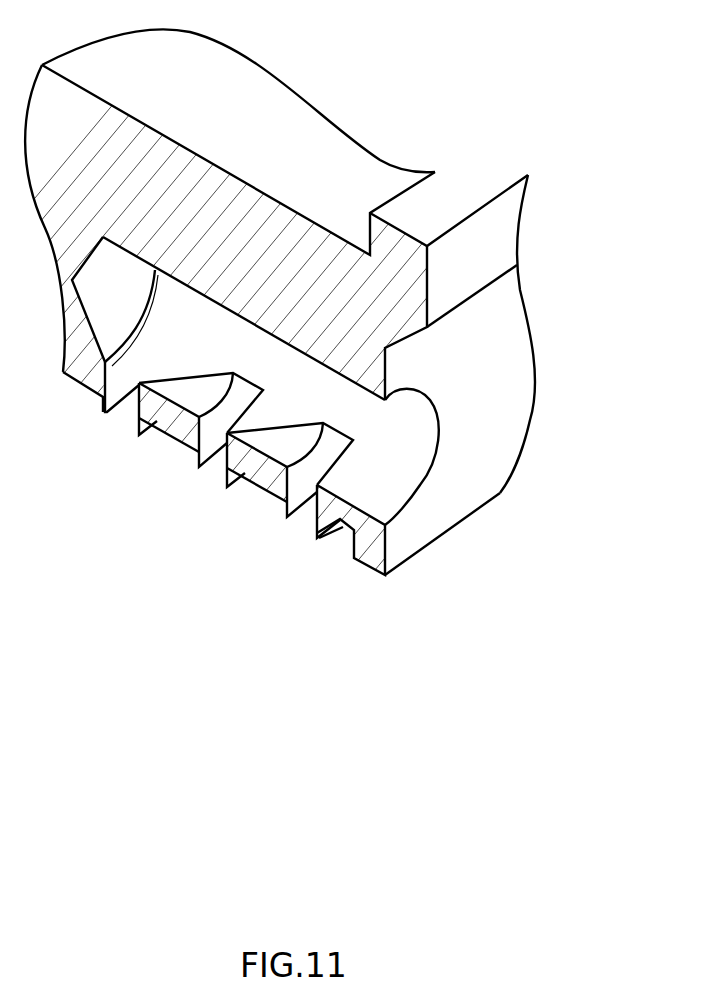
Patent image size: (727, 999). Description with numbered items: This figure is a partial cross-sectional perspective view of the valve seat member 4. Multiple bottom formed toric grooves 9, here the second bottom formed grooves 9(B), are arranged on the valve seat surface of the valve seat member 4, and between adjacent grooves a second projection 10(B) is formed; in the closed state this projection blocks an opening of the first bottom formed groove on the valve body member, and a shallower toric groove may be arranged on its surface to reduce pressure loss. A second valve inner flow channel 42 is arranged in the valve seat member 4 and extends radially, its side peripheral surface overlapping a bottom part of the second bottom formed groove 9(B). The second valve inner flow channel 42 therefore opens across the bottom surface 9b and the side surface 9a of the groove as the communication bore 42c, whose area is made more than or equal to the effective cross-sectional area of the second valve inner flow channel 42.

The valve seat member 4 is at (535, 410).
The second valve inner flow channel 42 is at (440, 442).
The communication bore 42c is at (150, 357).
The side surface 9a is at (120, 362).
The bottom surface 9b is at (160, 318).
The bottom formed toric groove 9 is at (112, 446).
The projection 10 is at (102, 430).